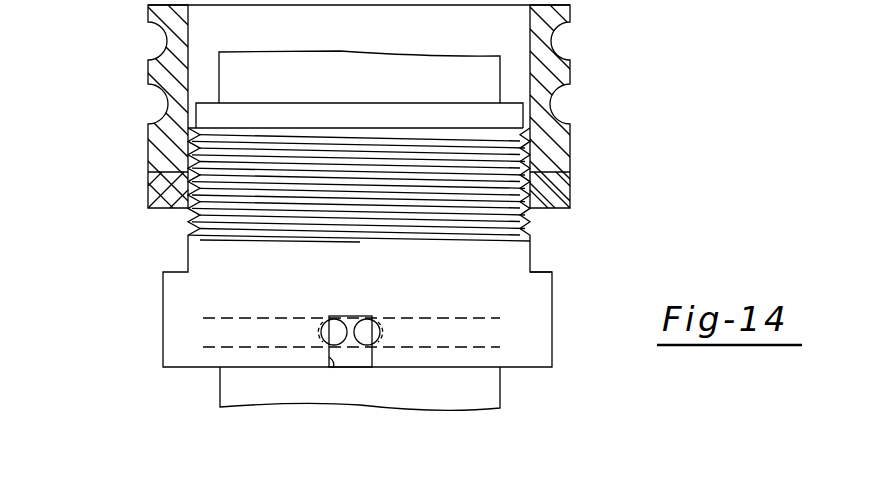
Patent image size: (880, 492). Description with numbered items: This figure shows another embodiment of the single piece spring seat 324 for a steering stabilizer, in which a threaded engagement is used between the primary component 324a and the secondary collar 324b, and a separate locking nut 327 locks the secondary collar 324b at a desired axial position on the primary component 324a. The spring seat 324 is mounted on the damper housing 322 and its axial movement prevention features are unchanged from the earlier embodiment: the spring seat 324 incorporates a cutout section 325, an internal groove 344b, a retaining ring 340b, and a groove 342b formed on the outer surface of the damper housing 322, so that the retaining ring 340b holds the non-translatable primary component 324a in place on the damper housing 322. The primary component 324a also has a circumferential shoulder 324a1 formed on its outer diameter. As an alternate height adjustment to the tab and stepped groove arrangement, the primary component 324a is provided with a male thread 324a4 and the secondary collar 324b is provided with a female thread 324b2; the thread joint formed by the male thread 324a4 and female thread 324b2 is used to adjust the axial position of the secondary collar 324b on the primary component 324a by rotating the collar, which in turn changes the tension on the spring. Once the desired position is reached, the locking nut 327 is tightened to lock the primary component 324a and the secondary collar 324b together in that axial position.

The damper housing 322 is at (465, 73).
The single piece spring seat 324 is at (592, 215).
The primary component 324a is at (183, 318).
The circumferential shoulder 324a1 is at (555, 268).
The male thread 324a4 is at (190, 222).
The secondary collar 324b is at (158, 67).
The female thread 324b2 is at (188, 136).
The cutout section 325 is at (337, 362).
The locking nut 327 is at (163, 193).
The retaining ring 340b is at (364, 332).
The groove 342b is at (348, 318).
The internal groove 344b is at (468, 345).